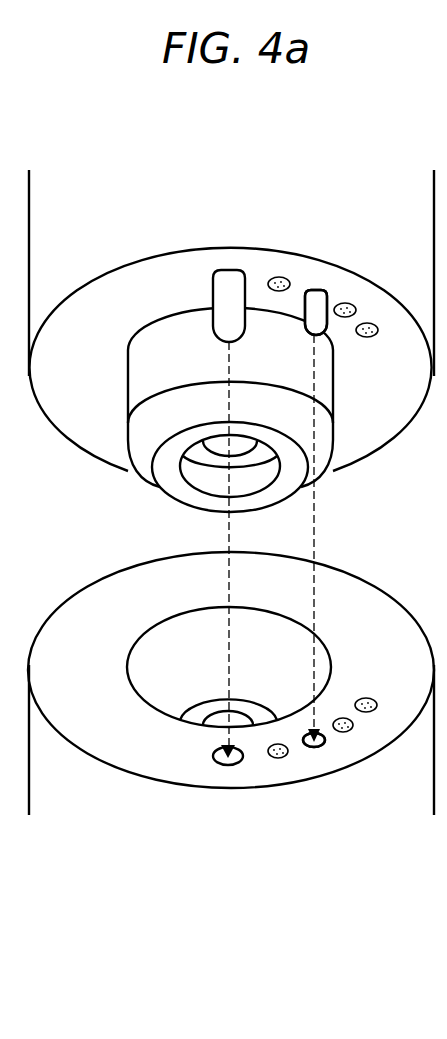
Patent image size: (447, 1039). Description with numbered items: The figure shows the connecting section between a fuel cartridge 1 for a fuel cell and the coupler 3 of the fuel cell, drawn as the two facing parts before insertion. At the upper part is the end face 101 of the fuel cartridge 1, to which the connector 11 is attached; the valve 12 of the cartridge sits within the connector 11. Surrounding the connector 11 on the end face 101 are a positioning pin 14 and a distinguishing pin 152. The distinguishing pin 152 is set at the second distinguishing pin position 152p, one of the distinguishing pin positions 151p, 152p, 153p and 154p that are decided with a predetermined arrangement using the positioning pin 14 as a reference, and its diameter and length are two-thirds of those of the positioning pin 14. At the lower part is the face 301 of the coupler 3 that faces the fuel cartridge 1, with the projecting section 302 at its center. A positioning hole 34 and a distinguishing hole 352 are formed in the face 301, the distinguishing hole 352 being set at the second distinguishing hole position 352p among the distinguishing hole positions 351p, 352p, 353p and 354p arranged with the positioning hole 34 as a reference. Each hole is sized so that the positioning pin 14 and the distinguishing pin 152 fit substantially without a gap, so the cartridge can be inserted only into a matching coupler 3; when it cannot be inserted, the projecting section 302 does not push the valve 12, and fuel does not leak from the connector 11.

The fuel cartridge 1 is at (362, 177).
The end face 101 is at (166, 268).
The connector 11 is at (156, 342).
The valve 12 is at (213, 465).
The positioning pin 14 is at (228, 277).
The distinguishing pin 152 is at (322, 296).
The second distinguishing pin position 152p is at (311, 290).
The distinguishing pin position 151p is at (281, 277).
The distinguishing pin position 153p is at (356, 309).
The distinguishing pin position 154p is at (371, 337).
The coupler 3 is at (92, 805).
The face 301 is at (120, 581).
The projecting section 302 is at (208, 710).
The positioning hole 34 is at (220, 764).
The distinguishing hole 352 is at (313, 748).
The second distinguishing hole position 352p is at (307, 747).
The distinguishing hole position 351p is at (273, 758).
The distinguishing hole position 353p is at (350, 731).
The distinguishing hole position 354p is at (367, 701).